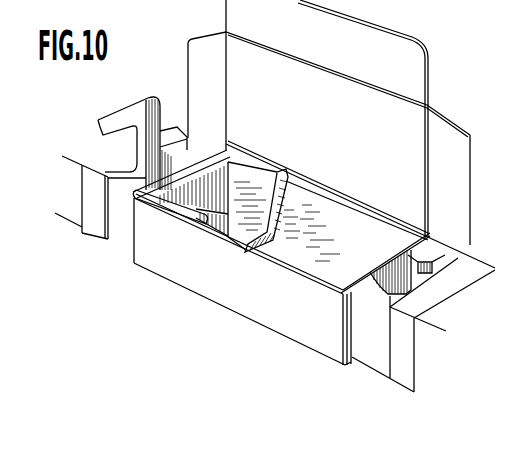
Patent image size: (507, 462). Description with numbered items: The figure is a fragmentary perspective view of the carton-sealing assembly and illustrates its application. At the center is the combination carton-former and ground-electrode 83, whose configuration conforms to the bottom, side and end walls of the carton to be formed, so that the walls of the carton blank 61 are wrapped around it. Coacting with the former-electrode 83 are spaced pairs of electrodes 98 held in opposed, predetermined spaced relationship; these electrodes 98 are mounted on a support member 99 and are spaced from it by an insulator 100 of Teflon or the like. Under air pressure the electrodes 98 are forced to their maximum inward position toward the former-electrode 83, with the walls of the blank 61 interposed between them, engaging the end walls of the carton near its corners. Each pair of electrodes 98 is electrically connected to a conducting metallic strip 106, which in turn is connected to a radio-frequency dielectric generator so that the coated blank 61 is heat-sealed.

The carton blank 61 is at (263, 315).
The combination carton-former and ground-electrode 83 is at (180, 210).
The electrodes 98 is at (128, 230).
The support member 99 is at (424, 387).
The insulator 100 is at (400, 375).
The conducting metallic strip 106 is at (150, 96).